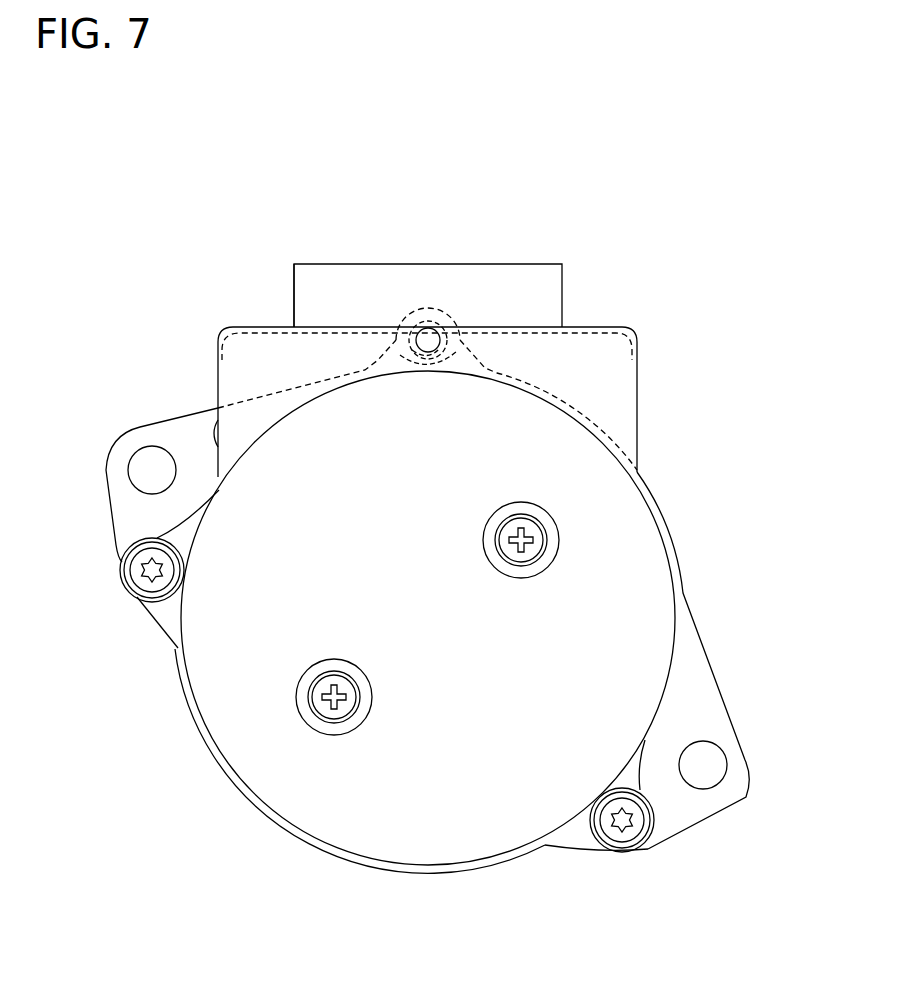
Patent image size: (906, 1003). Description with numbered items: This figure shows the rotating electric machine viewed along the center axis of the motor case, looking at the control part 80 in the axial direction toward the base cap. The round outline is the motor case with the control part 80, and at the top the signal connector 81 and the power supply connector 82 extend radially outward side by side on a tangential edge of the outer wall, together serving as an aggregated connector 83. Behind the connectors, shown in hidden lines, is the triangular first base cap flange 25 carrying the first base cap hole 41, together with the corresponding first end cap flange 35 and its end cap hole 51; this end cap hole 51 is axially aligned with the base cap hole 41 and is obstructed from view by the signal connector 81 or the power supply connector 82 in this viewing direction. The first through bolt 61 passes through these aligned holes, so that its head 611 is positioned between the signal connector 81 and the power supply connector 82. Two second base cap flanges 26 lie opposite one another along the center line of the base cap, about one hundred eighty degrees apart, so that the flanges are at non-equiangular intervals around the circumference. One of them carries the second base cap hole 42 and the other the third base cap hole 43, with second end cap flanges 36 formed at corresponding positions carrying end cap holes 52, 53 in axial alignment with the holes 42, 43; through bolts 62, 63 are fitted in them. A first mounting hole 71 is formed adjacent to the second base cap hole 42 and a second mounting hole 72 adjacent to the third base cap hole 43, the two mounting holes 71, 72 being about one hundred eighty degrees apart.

The first base cap flange 25 is at (397, 353).
The second base cap flanges 26 is at (157, 432).
The first end cap flange 35 is at (457, 330).
The second end cap flanges 36 is at (154, 610).
The first base cap hole 41 is at (424, 330).
The second base cap hole 42 is at (140, 563).
The third base cap hole 43 is at (637, 823).
The end cap hole 51 is at (440, 335).
The end cap hole 52 is at (137, 571).
The end cap hole 53 is at (633, 832).
The first through bolt 61 is at (423, 357).
The head 611 is at (412, 352).
The through bolt 62 is at (138, 600).
The through bolt 63 is at (615, 833).
The first mounting hole 71 is at (163, 472).
The second mounting hole 72 is at (707, 750).
The control part 80 is at (377, 835).
The signal connector 81 is at (527, 275).
The power supply connector 82 is at (325, 272).
The aggregated connector 83 is at (431, 254).